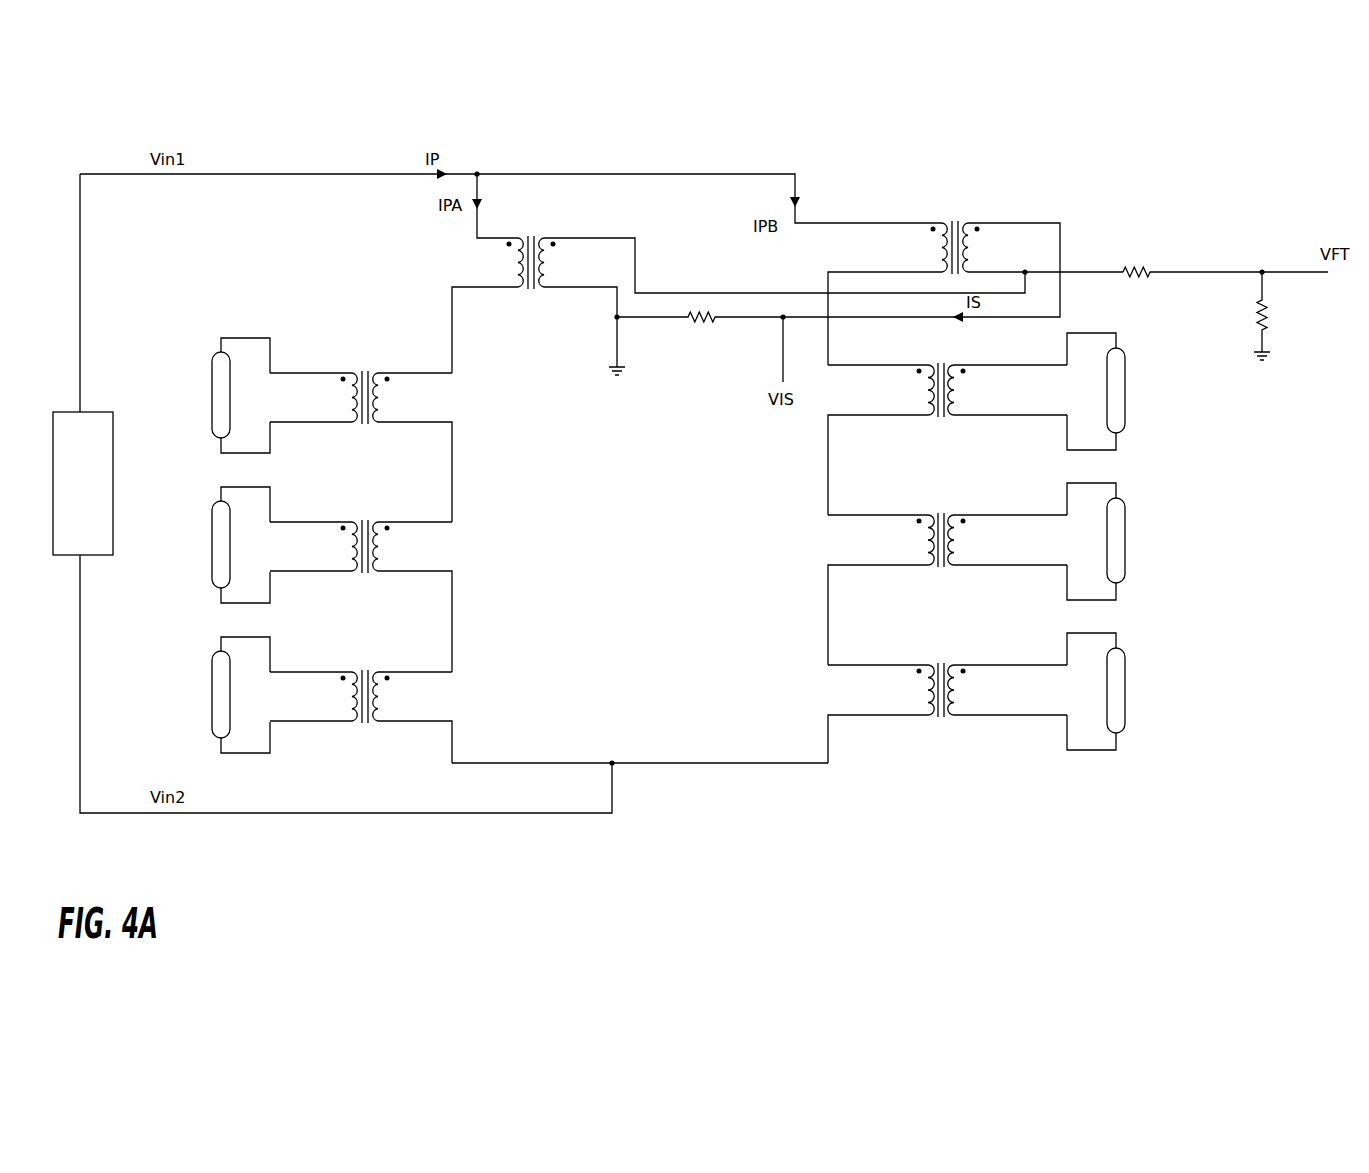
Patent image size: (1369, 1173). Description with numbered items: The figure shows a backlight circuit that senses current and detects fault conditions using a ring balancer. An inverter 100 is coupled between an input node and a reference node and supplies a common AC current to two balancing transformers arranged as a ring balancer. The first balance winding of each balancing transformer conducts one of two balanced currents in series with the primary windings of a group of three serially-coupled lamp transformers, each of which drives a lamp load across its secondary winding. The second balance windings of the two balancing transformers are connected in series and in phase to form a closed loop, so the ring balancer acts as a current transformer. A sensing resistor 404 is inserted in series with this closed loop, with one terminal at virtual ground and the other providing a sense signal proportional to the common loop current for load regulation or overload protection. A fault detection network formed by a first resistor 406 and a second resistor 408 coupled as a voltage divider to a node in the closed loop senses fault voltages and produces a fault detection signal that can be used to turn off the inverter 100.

The inverter 100 is at (95, 412).
The sensing resistor 404 is at (702, 360).
The first resistor 406 is at (1153, 235).
The second resistor 408 is at (1270, 306).